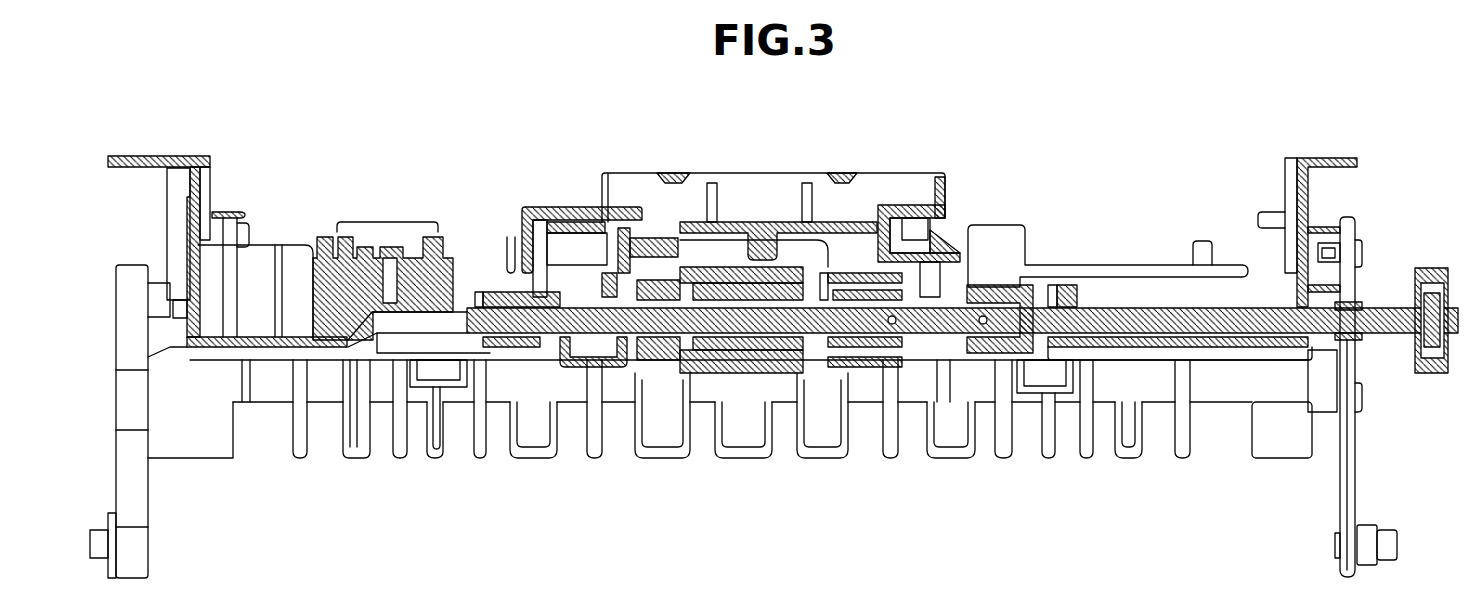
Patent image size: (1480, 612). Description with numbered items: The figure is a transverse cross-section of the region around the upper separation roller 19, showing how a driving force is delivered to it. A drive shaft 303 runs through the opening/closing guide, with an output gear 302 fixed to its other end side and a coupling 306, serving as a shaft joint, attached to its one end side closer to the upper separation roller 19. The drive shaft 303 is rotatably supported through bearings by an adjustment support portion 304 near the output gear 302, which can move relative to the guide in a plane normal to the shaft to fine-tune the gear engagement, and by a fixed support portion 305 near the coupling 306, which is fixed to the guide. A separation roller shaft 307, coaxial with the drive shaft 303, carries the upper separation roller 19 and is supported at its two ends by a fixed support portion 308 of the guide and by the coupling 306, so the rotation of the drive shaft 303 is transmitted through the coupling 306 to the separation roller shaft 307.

The upper separation roller 19 is at (733, 270).
The output gear 302 is at (1428, 268).
The drive shaft 303 is at (1240, 307).
The adjustment support portion 304 is at (1345, 288).
The fixed support portion 305 is at (1063, 283).
The coupling 306 is at (990, 285).
The separation roller shaft 307 is at (584, 306).
The fixed support portion 308 is at (508, 272).